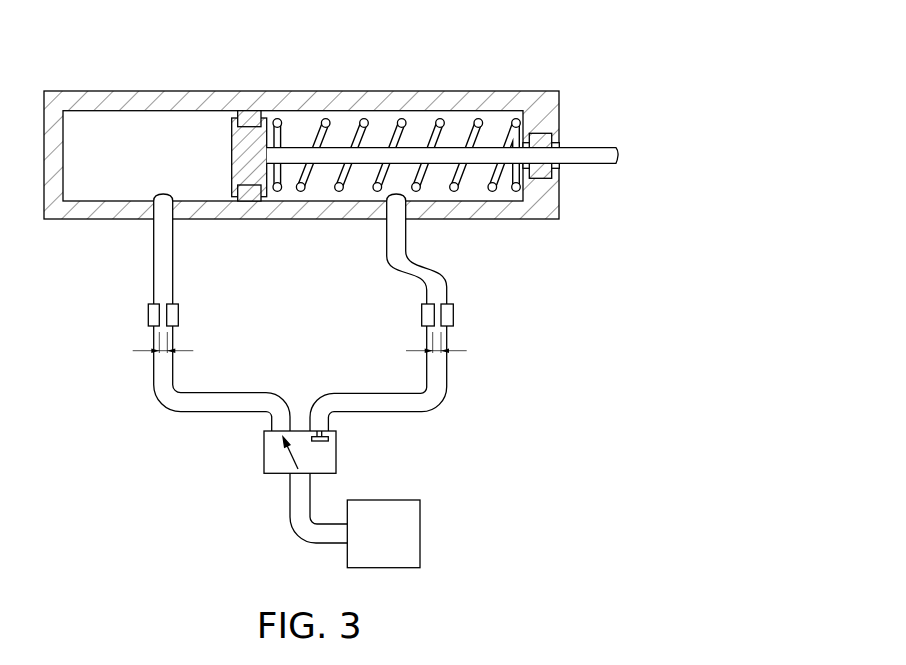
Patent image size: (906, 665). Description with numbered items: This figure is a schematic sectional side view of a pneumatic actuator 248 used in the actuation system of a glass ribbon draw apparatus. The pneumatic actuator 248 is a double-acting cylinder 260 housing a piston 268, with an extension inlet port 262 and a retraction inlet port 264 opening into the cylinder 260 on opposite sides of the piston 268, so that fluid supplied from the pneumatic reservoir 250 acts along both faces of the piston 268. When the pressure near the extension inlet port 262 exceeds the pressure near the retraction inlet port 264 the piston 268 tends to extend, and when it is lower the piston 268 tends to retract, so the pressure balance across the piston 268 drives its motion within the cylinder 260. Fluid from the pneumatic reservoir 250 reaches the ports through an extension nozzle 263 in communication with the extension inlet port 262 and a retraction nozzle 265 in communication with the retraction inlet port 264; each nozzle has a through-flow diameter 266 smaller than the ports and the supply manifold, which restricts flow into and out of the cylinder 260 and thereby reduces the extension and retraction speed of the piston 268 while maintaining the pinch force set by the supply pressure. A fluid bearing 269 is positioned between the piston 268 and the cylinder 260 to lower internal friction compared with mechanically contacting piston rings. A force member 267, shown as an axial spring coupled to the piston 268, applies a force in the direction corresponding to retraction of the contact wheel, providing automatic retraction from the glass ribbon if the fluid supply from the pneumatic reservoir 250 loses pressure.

The pneumatic actuator 248 is at (331, 110).
The double-acting cylinder 260 is at (342, 90).
The piston 268 is at (232, 142).
The fluid bearing 269 is at (250, 115).
The force member 267 is at (477, 117).
The extension inlet port 262 is at (155, 198).
The retraction inlet port 264 is at (380, 197).
The extension nozzle 263 is at (147, 315).
The retraction nozzle 265 is at (454, 315).
The through-flow diameter 266 is at (326, 349).
The pneumatic reservoir 250 is at (420, 531).